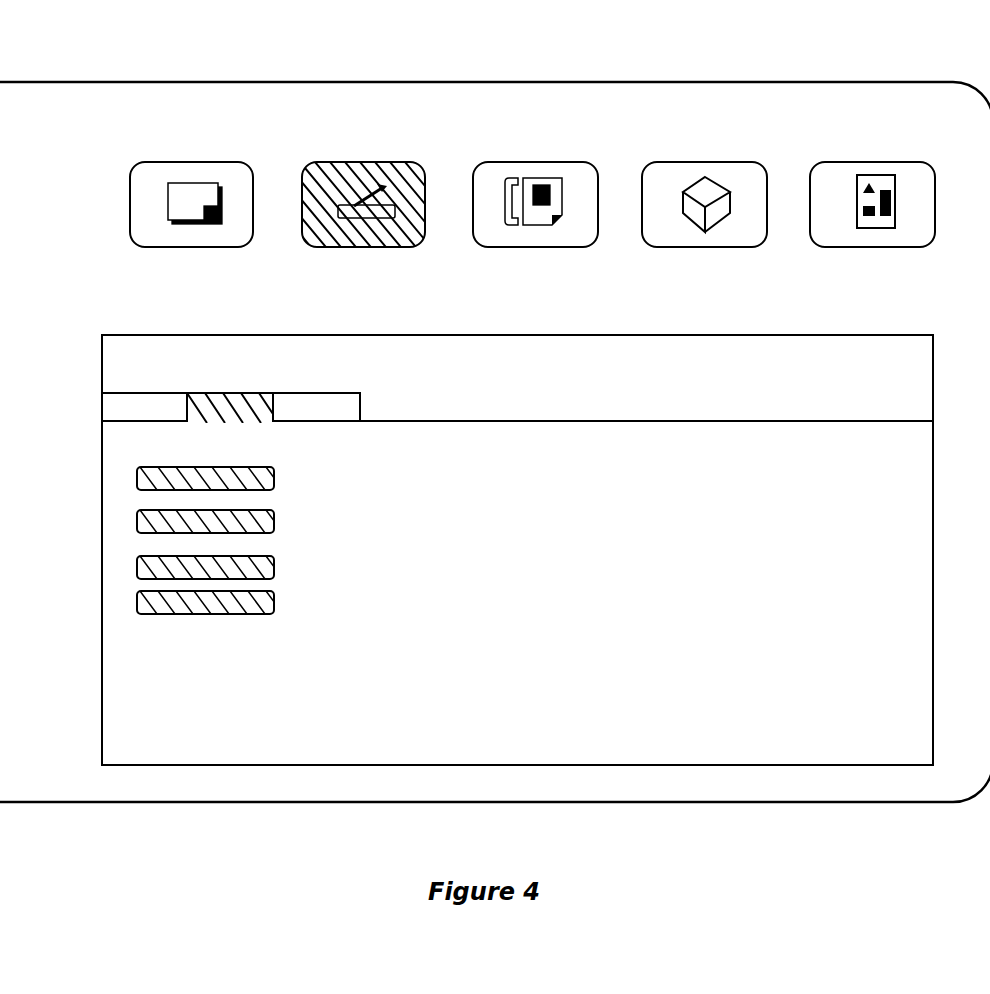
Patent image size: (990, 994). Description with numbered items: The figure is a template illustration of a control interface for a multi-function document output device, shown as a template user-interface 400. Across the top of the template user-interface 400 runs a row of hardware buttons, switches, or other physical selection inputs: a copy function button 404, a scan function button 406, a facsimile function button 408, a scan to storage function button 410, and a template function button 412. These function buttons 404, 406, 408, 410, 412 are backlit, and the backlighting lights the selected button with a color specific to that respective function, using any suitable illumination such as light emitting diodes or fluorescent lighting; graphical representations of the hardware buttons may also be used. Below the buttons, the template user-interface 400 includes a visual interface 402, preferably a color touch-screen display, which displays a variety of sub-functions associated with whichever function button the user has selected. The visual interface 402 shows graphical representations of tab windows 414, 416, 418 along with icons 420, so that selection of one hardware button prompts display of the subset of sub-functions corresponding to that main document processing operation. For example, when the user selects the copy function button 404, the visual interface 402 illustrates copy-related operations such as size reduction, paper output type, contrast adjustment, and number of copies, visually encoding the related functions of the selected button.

The template user-interface 400 is at (818, 82).
The visual interface 402 is at (655, 335).
The copy function button 404 is at (186, 162).
The scan function button 406 is at (358, 162).
The facsimile function button 408 is at (530, 162).
The scan to storage function button 410 is at (700, 162).
The template function button 412 is at (875, 162).
The tab window 414 is at (130, 393).
The tab window 416 is at (225, 393).
The tab window 418 is at (340, 393).
The icons 420 is at (275, 467).